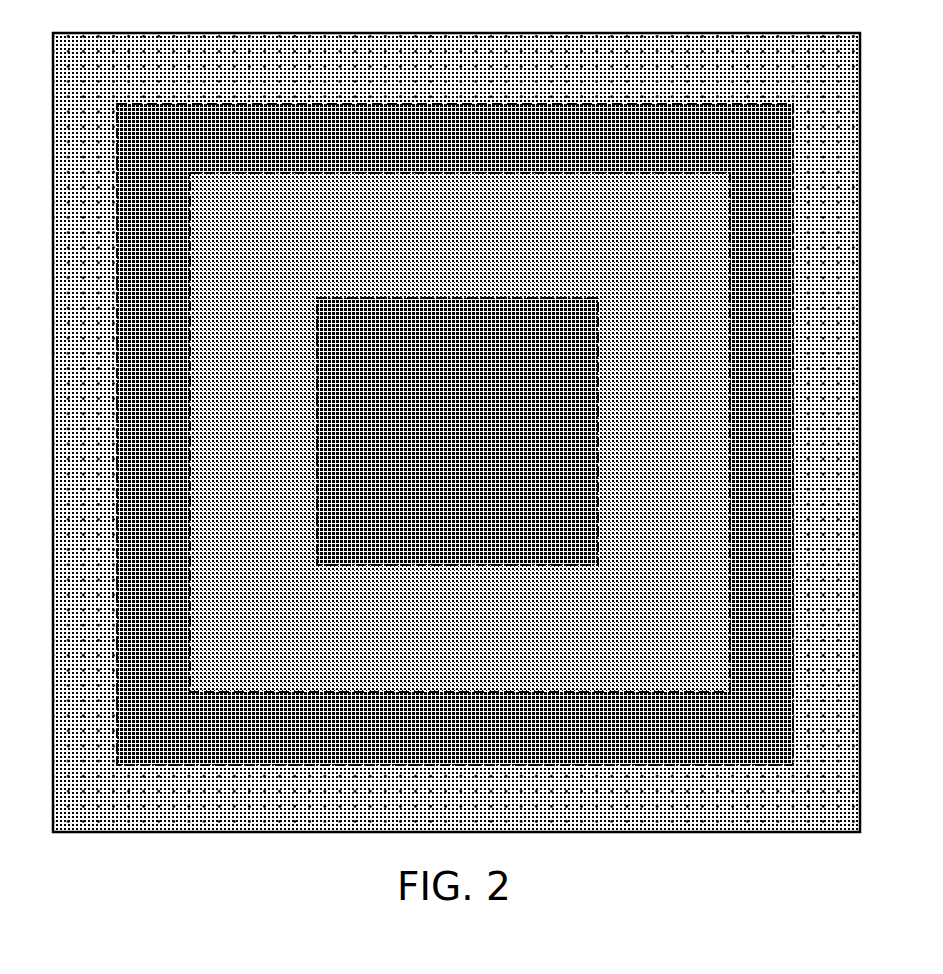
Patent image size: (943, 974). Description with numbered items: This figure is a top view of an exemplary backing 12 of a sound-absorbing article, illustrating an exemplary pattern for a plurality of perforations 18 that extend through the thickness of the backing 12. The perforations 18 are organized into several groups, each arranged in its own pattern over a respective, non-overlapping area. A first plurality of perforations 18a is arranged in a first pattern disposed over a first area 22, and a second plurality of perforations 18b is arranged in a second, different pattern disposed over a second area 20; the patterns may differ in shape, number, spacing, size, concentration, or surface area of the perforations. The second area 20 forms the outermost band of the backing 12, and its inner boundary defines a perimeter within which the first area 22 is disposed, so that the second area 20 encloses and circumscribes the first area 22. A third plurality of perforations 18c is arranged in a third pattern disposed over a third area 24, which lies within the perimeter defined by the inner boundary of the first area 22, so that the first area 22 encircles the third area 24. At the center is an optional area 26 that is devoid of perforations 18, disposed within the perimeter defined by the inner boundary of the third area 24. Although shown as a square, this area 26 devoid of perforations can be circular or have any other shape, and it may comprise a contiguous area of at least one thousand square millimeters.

The backing 12 is at (475, 417).
The perforations 18 is at (288, 155).
The first plurality of perforations 18a is at (582, 160).
The second plurality of perforations 18b is at (550, 52).
The third plurality of perforations 18c is at (537, 275).
The second area 20 is at (386, 80).
The first area 22 is at (456, 150).
The third area 24 is at (495, 246).
The area devoid of perforations 26 is at (486, 402).